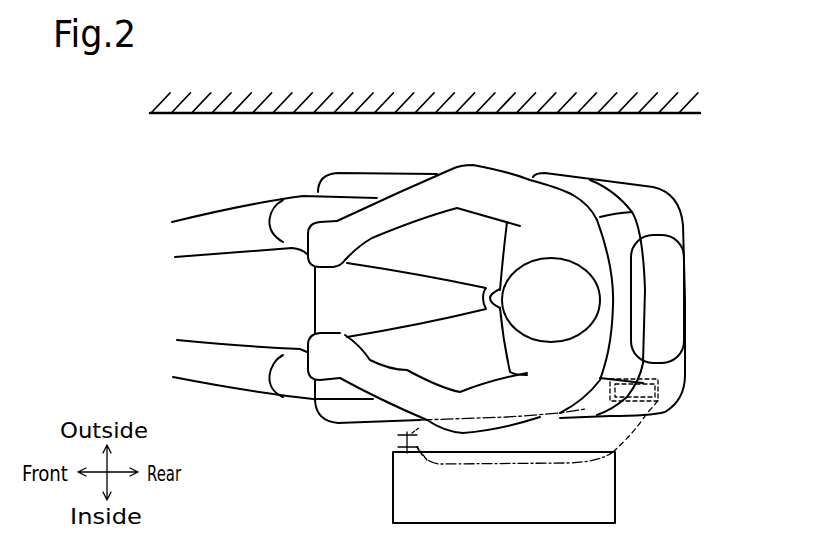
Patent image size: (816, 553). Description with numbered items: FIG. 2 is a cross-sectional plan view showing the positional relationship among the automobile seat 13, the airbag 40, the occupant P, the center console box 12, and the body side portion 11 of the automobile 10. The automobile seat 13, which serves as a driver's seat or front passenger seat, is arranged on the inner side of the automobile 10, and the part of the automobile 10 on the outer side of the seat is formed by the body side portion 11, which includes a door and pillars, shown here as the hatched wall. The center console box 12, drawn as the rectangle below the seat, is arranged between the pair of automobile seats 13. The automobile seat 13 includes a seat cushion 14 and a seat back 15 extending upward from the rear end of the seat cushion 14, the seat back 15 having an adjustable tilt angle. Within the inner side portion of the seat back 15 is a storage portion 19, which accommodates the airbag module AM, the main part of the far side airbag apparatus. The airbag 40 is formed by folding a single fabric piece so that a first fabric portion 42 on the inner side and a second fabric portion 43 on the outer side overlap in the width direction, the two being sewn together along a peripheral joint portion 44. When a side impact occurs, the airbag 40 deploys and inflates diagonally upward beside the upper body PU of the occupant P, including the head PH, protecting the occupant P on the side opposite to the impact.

The automobile 10 is at (116, 99).
The body side portion 11 is at (185, 117).
The center console box 12 is at (616, 486).
The automobile seat 13 is at (714, 170).
The seat cushion 14 is at (316, 300).
The seat back 15 is at (650, 186).
The storage portion 19 is at (654, 380).
The airbag 40 is at (515, 477).
The first fabric portion 42 is at (457, 466).
The second fabric portion 43 is at (473, 417).
The peripheral joint portion 44 is at (407, 435).
The airbag module AM is at (662, 388).
The occupant P is at (420, 299).
The head PH is at (553, 273).
The upper body PU is at (500, 242).